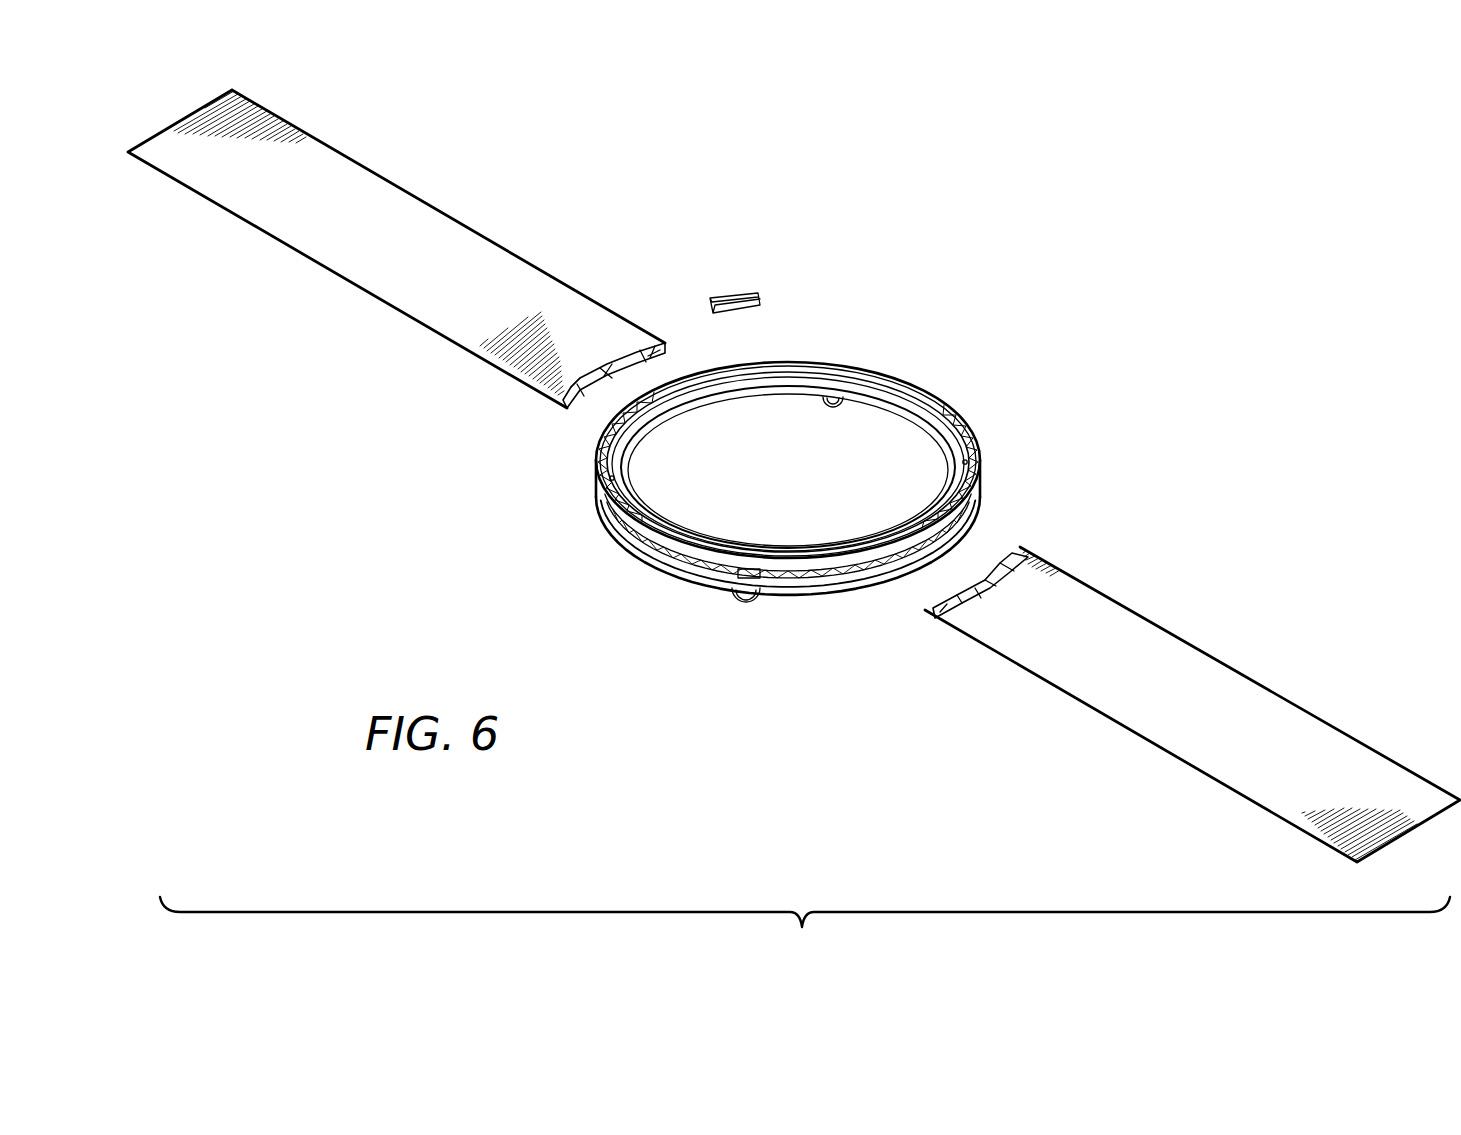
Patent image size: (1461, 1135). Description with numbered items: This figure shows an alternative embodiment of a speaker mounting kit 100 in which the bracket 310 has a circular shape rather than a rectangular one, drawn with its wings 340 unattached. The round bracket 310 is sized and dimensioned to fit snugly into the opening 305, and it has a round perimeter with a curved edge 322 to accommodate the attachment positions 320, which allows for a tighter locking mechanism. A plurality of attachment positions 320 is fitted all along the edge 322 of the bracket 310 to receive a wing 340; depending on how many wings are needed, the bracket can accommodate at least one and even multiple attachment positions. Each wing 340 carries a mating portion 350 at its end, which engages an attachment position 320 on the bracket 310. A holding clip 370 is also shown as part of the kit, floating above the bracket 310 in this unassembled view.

The wearable electronic device 100 is at (1098, 300).
The opening 305 is at (858, 428).
The bracket 310 is at (938, 401).
The attachment positions 320 is at (982, 477).
The edge 322 is at (778, 590).
The wings 340 is at (383, 198).
The mating portion 350 is at (668, 340).
The holding clip 370 is at (762, 303).